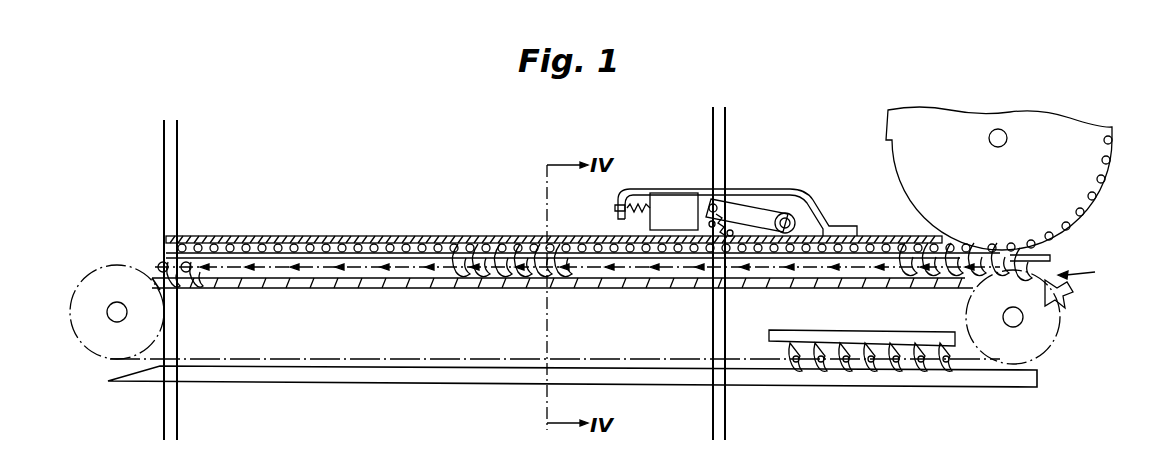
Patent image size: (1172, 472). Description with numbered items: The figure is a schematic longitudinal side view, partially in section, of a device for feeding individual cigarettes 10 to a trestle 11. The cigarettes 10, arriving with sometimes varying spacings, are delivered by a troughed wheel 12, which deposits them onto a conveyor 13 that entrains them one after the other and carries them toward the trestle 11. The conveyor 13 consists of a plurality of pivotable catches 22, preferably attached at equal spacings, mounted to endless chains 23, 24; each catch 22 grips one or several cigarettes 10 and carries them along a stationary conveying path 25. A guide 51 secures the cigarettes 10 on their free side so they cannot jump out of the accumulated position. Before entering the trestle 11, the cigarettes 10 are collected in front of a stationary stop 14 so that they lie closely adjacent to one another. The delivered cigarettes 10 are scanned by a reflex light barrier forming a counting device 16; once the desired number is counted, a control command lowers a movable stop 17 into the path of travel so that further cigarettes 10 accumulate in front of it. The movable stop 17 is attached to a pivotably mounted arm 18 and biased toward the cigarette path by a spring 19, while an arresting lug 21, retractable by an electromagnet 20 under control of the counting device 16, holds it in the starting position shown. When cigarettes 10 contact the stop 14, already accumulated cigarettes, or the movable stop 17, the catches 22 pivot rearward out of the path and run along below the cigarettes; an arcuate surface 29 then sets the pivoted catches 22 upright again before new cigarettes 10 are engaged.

The cigarettes 10 is at (403, 241).
The trestle 11 is at (212, 152).
The troughed wheel 12 is at (945, 122).
The conveyor 13 is at (1091, 269).
The stationary stop 14 is at (170, 243).
The counting device 16 is at (745, 198).
The movable stop 17 is at (712, 227).
The pivotably mounted arm 18 is at (763, 212).
The spring 19 is at (731, 236).
The electromagnet 20 is at (657, 200).
The arresting lug 21 is at (712, 206).
The pivotable catches 22 is at (530, 244).
The endless chain 23 is at (635, 360).
The endless chain 24 is at (555, 388).
The stationary conveying path 25 is at (1046, 257).
The arcuate surface 29 is at (831, 340).
The guide 51 is at (478, 242).